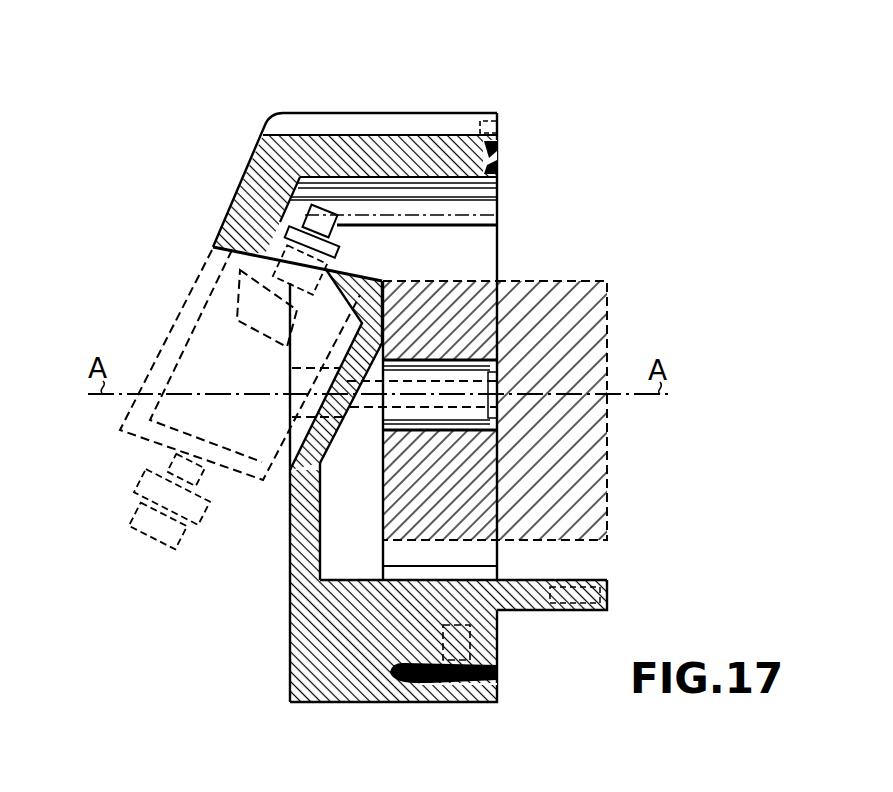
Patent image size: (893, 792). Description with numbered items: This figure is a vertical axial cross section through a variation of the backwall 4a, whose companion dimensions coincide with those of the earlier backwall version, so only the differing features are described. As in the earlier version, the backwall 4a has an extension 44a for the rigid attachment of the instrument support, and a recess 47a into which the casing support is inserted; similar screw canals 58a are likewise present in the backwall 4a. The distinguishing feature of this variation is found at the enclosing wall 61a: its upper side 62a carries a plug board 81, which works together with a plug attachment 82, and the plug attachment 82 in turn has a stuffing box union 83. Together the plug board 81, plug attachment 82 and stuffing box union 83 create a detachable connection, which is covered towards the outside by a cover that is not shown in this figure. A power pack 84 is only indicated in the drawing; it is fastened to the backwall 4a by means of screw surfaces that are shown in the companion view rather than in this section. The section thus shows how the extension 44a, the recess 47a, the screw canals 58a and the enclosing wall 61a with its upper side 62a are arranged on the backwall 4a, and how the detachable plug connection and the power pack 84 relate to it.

The backwall 4a is at (238, 130).
The upper side 62a is at (237, 227).
The plug board 81 is at (320, 268).
The plug attachment 82 is at (150, 417).
The stuffing box union 83 is at (155, 494).
The screw canals 58a is at (440, 373).
The power pack 84 is at (598, 303).
The enclosing wall 61a is at (300, 556).
The extension 44a is at (540, 606).
The recess 47a is at (496, 676).